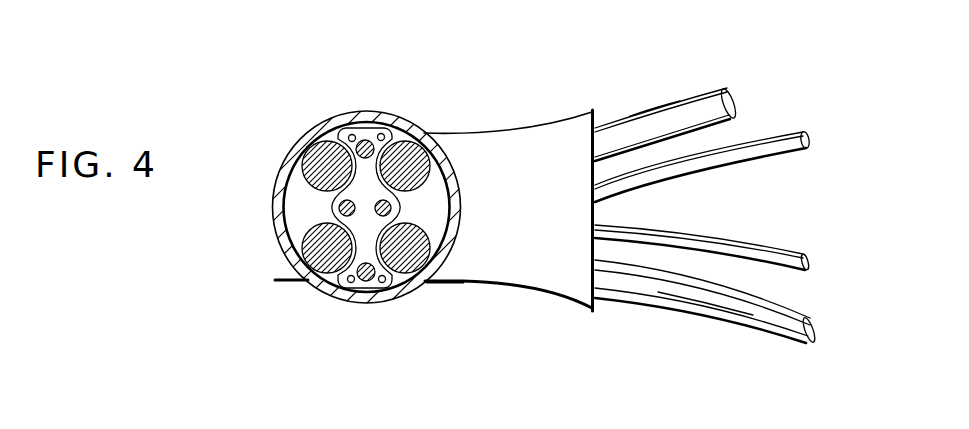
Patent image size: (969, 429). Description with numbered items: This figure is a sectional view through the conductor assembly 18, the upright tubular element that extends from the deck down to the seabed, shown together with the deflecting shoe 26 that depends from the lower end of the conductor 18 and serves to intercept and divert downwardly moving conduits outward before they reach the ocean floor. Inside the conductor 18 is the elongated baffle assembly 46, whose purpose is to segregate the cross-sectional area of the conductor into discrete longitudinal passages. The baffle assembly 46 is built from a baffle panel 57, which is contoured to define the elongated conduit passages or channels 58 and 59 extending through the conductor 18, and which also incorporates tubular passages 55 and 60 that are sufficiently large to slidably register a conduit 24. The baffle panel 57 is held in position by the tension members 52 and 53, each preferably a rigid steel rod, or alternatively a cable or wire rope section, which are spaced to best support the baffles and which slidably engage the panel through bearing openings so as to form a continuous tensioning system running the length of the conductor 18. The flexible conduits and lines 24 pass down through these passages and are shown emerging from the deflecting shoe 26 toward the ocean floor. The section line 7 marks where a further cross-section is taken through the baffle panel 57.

The section line 7- 7 is at (292, 292).
The conductor assembly 18 is at (300, 140).
The conduits and lines 24 is at (315, 163).
The deflecting shoe 26 is at (548, 272).
The baffle assembly 46 is at (400, 126).
The tension member 52 is at (352, 282).
The tension member 53 is at (381, 282).
The tubular passage 55 is at (363, 143).
The baffle panel 57 is at (372, 130).
The conduit passage 58 is at (300, 208).
The conduit passage 59 is at (428, 190).
The tubular passage 60 is at (392, 209).